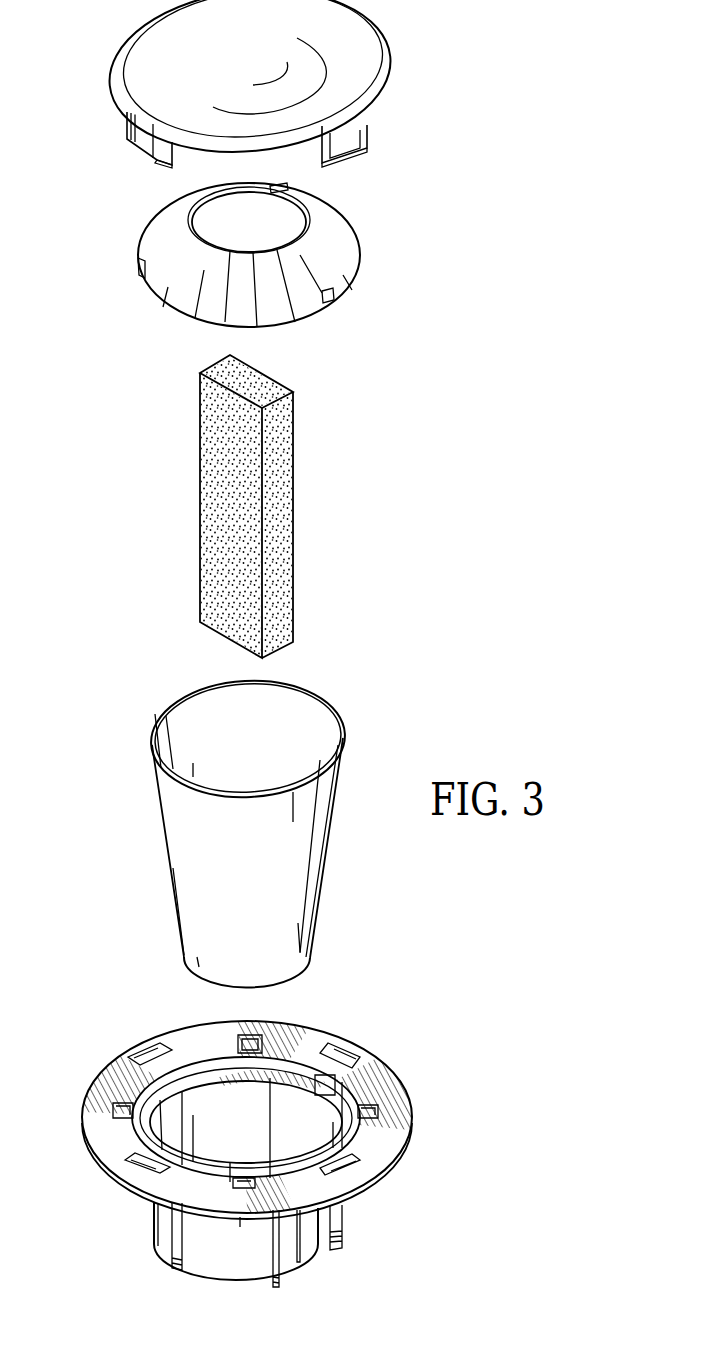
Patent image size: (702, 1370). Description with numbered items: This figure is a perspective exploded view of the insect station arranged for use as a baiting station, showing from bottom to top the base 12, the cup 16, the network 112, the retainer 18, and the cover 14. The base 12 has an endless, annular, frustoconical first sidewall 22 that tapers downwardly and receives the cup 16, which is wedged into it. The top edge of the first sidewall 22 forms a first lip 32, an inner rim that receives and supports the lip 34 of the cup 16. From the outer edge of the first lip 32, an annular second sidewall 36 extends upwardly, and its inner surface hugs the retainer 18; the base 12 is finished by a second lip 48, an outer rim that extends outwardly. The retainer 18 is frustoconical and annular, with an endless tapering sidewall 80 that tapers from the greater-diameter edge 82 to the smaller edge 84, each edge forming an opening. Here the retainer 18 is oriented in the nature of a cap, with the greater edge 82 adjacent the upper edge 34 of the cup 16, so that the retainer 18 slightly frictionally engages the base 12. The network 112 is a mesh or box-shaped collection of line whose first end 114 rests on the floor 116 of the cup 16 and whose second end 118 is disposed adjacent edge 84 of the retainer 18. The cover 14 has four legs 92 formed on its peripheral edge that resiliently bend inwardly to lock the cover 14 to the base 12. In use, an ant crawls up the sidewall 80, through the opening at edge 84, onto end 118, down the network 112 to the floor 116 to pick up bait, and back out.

The base 12 is at (246, 1150).
The cover 14 is at (264, 84).
The cup 16 is at (274, 843).
The retainer 18 is at (281, 268).
The first sidewall 22 is at (218, 1243).
The first lip 32 is at (145, 1128).
The lip 34 is at (327, 708).
The second sidewall 36 is at (214, 1062).
The second lip 48 is at (377, 1075).
The sidewall 80 is at (328, 238).
The edge 82 is at (287, 323).
The edge 84 is at (207, 236).
The legs 92 is at (366, 132).
The network 112 is at (255, 501).
The first end 114 is at (222, 633).
The floor 116 is at (293, 977).
The second end 118 is at (215, 366).